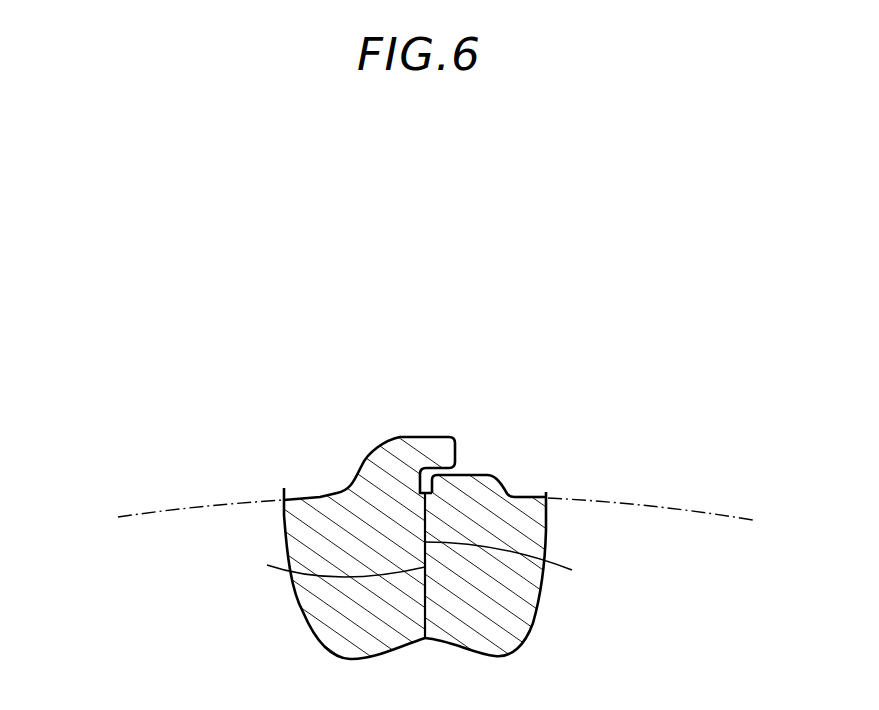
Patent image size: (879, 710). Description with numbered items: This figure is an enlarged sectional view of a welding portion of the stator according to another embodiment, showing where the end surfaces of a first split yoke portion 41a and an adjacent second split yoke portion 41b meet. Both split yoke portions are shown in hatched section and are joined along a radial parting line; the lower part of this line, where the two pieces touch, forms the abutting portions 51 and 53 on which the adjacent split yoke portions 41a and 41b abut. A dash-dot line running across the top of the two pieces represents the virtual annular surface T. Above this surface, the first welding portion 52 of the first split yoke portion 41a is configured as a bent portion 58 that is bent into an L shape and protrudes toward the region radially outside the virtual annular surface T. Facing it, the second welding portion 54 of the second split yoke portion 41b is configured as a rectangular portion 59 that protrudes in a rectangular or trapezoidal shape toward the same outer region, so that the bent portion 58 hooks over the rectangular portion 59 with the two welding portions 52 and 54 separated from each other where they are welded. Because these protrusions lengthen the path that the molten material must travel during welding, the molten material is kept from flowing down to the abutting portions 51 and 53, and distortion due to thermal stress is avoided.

The virtual annular surface T is at (163, 510).
The abutting portion 51 is at (362, 547).
The abutting portion 53 is at (449, 547).
The bent portion 58 is at (421, 440).
The first welding portion 52 is at (395, 418).
The rectangular portion 59 is at (467, 483).
The second welding portion 54 is at (493, 438).
The first split yoke portion 41a is at (322, 505).
The second split yoke portion 41b is at (522, 508).